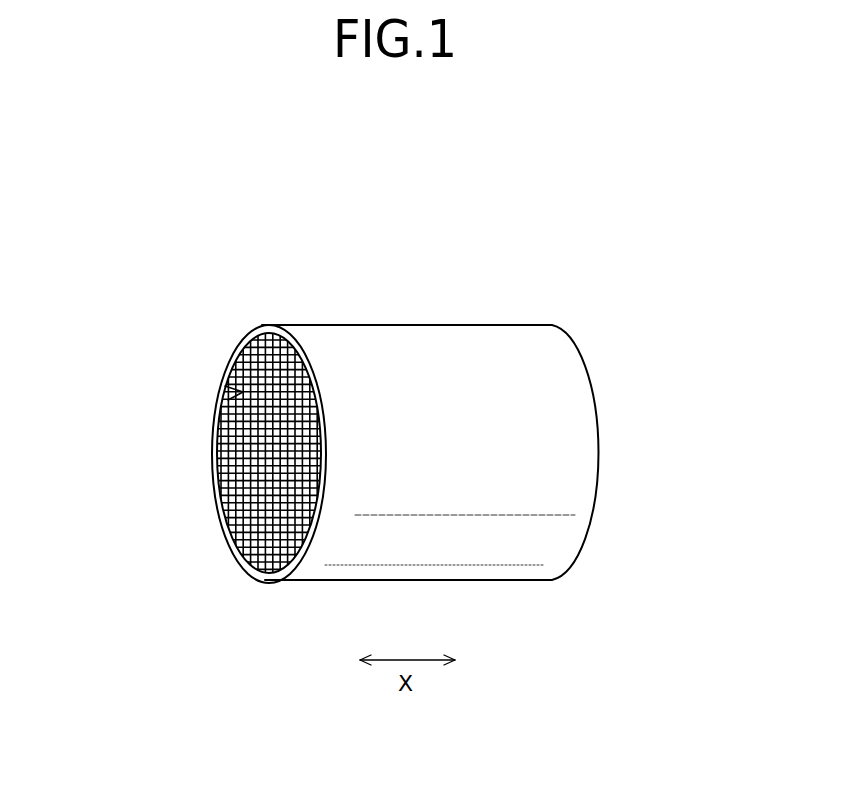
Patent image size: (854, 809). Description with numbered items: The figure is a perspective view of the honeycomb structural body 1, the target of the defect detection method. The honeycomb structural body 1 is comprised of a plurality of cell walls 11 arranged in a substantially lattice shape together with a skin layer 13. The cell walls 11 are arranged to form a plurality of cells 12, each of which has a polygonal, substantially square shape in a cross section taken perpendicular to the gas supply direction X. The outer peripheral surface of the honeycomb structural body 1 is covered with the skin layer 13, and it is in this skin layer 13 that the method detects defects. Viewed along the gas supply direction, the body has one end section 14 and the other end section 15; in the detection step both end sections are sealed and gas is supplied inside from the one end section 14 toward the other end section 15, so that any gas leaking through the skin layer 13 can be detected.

The honeycomb structural body 1 is at (398, 350).
The cell walls 11 is at (245, 476).
The cells 12 is at (253, 366).
The skin layer 13 is at (258, 327).
The end section 14 is at (243, 392).
The end section 15 is at (623, 467).